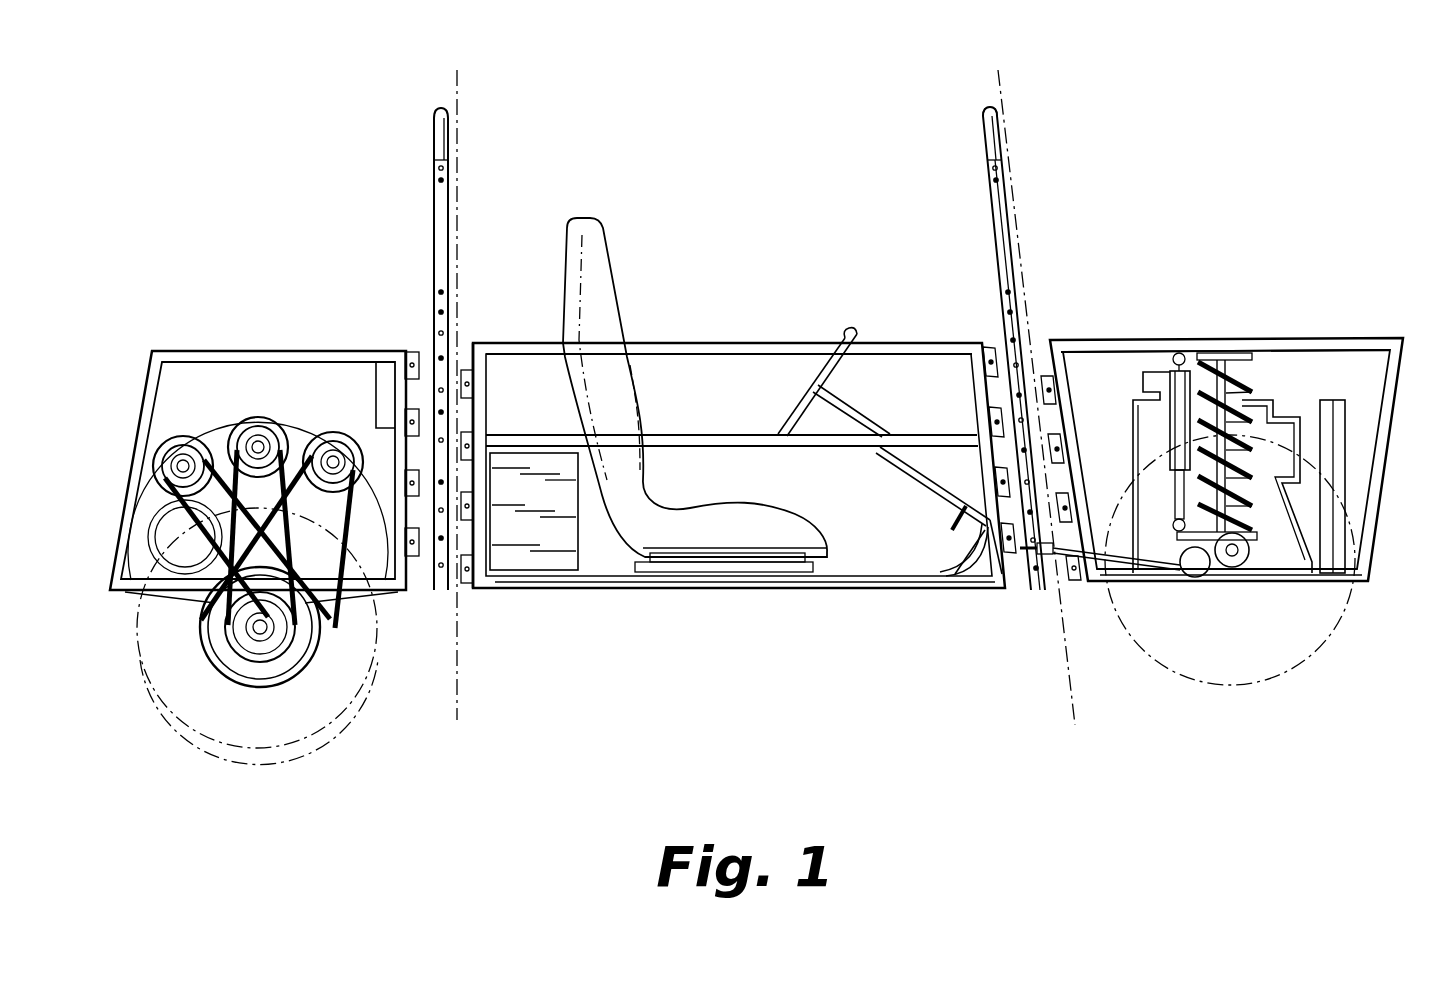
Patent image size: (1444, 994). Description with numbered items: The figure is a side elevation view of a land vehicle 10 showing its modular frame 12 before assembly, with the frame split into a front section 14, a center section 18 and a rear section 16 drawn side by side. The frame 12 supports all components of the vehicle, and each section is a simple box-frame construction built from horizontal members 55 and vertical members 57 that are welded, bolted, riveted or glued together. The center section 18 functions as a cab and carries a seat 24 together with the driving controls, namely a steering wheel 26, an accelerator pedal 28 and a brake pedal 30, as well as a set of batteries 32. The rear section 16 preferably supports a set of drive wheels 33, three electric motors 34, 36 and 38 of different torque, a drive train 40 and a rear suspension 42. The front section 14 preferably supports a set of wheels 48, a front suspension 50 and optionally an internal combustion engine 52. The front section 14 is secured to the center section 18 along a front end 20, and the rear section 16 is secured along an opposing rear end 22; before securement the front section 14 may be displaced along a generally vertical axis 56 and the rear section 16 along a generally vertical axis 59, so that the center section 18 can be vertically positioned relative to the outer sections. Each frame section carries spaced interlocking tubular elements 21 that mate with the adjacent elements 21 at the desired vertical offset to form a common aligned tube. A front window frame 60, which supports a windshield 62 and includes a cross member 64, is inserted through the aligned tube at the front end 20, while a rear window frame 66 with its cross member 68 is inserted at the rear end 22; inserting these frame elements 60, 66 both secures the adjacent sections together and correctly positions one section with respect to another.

The land vehicle 10 is at (1122, 100).
The frame 12 is at (717, 590).
The front section 14 is at (1140, 232).
The rear section 16 is at (248, 186).
The center section 18 is at (655, 165).
The front end 20 is at (1021, 585).
The interlocking tubular elements 21 is at (410, 352).
The rear end 22 is at (472, 330).
The seat 24 is at (600, 318).
The steering wheel 26 is at (848, 330).
The accelerator pedal 28 is at (953, 552).
The brake pedal 30 is at (948, 528).
The batteries 32 is at (543, 548).
The drive wheels 33 is at (357, 700).
The electric motor 34 is at (333, 432).
The electric motor 36 is at (262, 425).
The electric motor 38 is at (190, 440).
The drive train 40 is at (300, 690).
The rear suspension 42 is at (135, 637).
The wheels 48 is at (1173, 662).
The front suspension 50 is at (1262, 340).
The internal combustion engine 52 is at (1330, 340).
The horizontal members 55 is at (727, 350).
The vertical axis 56 is at (1068, 688).
The vertical members 57 is at (148, 402).
The vertical axis 59 is at (457, 698).
The front window frame 60 is at (982, 292).
The windshield 62 is at (988, 212).
The cross member 64 is at (980, 132).
The rear window frame 66 is at (428, 245).
The cross member 68 is at (433, 130).